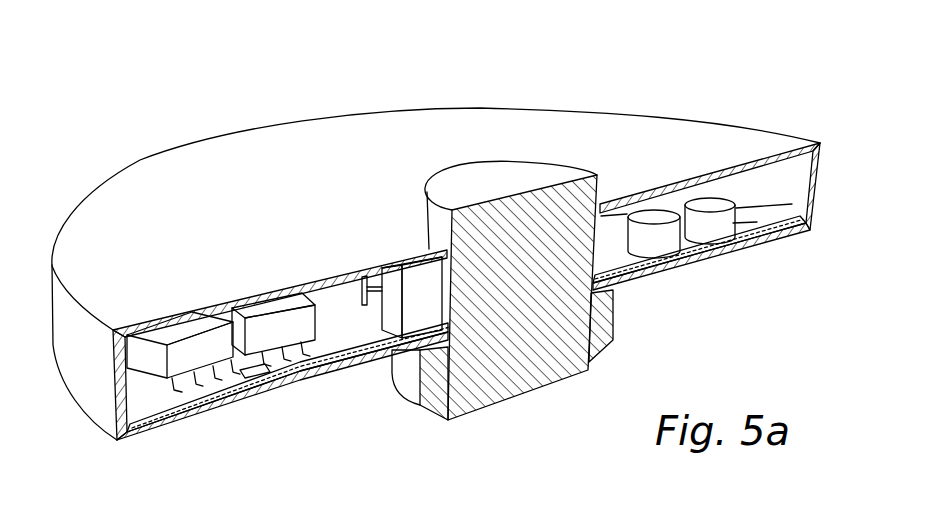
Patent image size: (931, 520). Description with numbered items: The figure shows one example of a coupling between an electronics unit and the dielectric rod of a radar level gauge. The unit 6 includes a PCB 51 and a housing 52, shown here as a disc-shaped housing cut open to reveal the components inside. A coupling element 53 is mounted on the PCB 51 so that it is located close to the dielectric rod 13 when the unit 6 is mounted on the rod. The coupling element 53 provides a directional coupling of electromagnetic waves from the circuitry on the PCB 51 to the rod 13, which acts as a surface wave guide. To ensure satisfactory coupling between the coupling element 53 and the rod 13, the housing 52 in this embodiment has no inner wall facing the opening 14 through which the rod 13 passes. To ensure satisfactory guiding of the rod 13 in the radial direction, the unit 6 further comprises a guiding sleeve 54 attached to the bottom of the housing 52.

The unit 6 is at (737, 143).
The housing 52 is at (542, 123).
The dielectric rod 13 is at (607, 187).
The opening 14 is at (447, 251).
The guiding sleeve 54 is at (448, 421).
The coupling element 53 is at (393, 323).
The PCB 51 is at (693, 240).